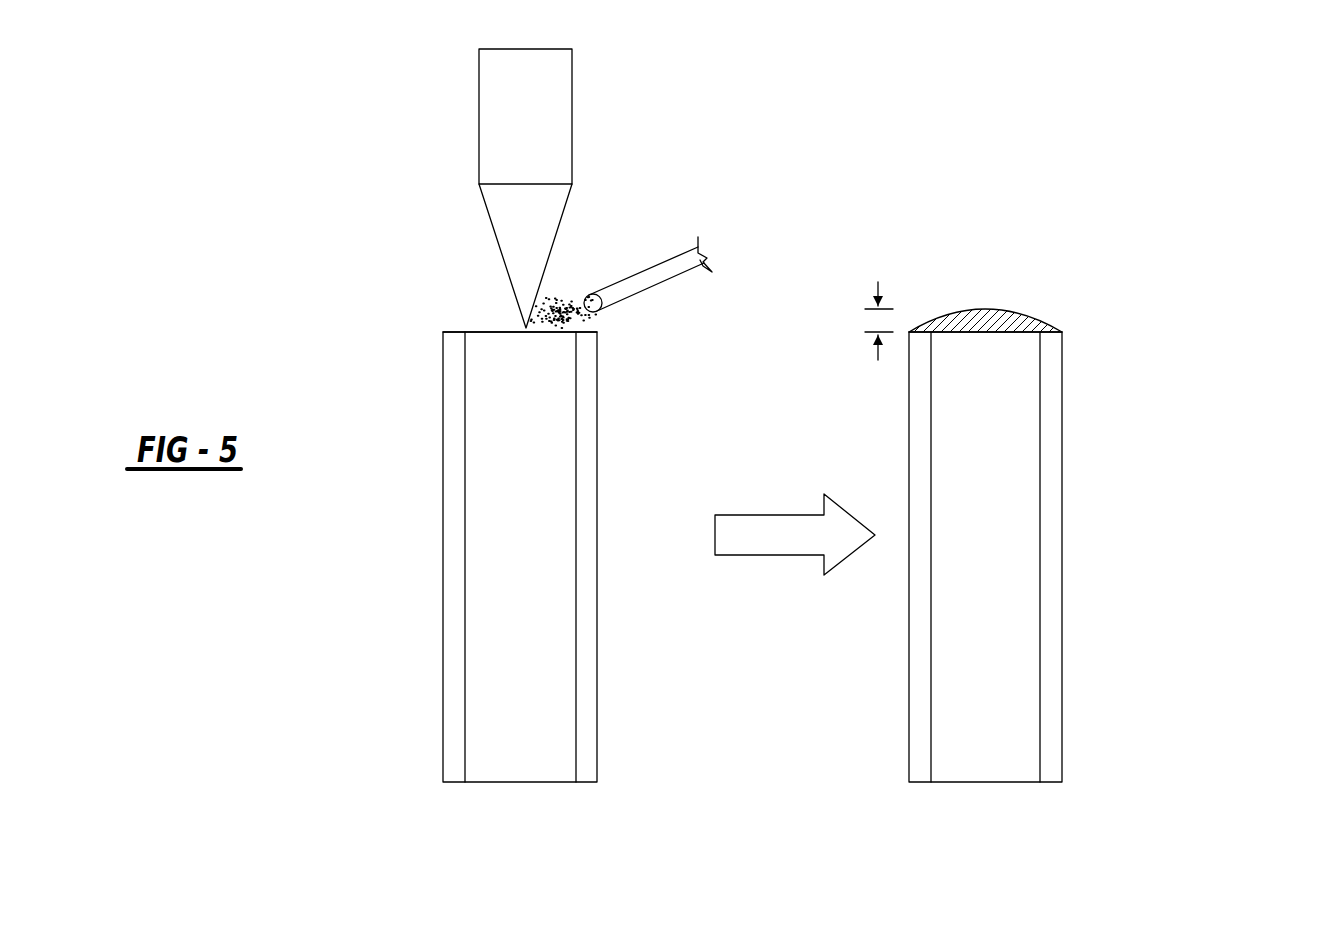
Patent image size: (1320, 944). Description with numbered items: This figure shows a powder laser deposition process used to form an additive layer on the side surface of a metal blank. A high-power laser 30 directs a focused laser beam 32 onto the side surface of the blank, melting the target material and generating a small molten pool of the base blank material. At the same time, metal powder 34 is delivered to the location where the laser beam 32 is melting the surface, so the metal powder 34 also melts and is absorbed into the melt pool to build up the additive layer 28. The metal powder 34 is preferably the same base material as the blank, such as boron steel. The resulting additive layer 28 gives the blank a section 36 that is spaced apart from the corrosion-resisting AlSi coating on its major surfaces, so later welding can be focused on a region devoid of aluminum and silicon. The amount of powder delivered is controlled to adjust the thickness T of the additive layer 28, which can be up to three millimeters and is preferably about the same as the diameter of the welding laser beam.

The additive layer 28 is at (991, 276).
The high-power laser 30 is at (541, 105).
The focused laser beam 32 is at (496, 238).
The metal powder 34 is at (577, 317).
The section 36 is at (982, 317).
The thickness T is at (875, 290).